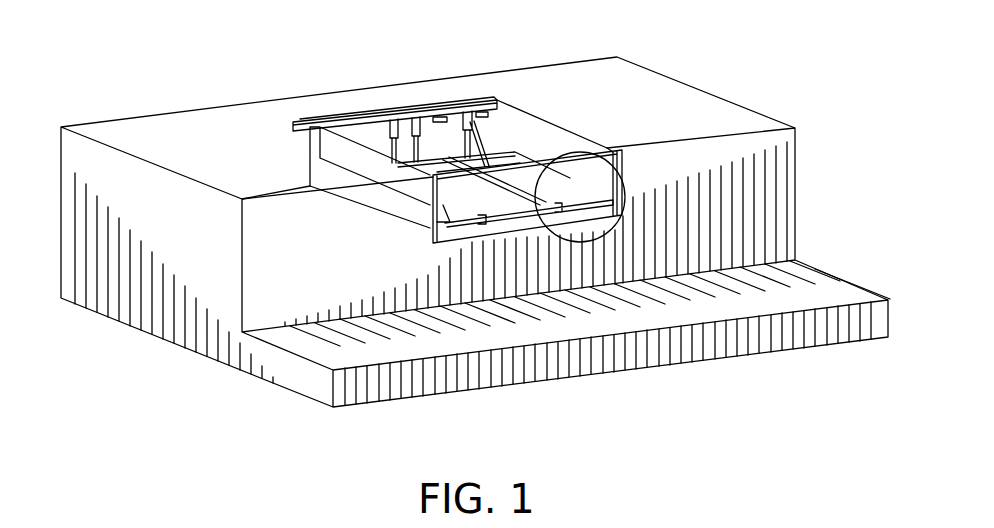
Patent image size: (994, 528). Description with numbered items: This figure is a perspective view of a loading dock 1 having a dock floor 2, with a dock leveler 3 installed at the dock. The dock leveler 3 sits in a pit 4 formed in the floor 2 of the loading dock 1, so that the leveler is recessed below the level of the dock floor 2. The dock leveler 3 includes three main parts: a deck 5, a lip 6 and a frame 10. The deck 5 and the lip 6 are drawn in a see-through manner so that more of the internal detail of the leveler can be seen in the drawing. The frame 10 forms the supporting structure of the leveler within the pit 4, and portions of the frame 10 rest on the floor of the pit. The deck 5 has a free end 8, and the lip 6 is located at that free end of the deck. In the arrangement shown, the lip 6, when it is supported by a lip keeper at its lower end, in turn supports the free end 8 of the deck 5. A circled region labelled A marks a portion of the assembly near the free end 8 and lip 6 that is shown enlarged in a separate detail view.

The loading dock 1 is at (475, 203).
The dock floor 2 is at (246, 150).
The dock leveler 3 is at (423, 97).
The pit 4 is at (467, 242).
The deck 5 is at (520, 128).
The lip 6 is at (455, 190).
The free end 8 is at (607, 145).
The frame 10 is at (383, 130).
The detail region A is at (612, 229).